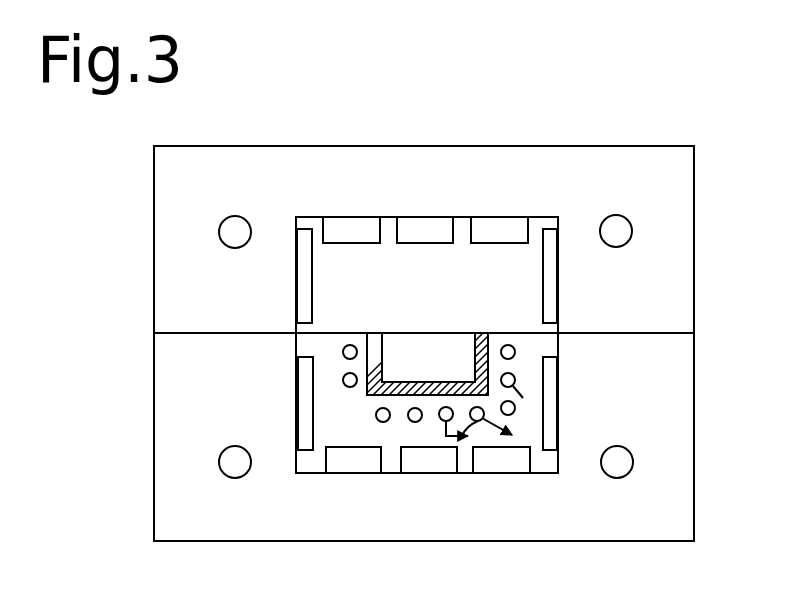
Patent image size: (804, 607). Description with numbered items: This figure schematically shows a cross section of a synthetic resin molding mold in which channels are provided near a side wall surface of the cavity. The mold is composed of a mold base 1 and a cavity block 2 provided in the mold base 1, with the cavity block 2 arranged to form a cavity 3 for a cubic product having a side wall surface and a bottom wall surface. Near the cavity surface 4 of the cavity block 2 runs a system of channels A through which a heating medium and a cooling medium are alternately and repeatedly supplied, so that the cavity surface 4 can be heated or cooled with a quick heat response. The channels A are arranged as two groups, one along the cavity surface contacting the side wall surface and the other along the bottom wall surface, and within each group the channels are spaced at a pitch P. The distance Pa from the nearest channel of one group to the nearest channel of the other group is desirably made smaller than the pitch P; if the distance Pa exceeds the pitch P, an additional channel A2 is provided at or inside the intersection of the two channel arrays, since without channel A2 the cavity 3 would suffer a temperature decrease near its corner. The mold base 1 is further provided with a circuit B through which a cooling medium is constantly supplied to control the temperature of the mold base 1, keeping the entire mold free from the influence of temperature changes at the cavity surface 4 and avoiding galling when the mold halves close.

The mold base 1 is at (660, 146).
The cavity block 2 is at (548, 271).
The cavity 3 is at (493, 343).
The cavity surface 4 is at (400, 395).
The channel A is at (418, 421).
The pitch P is at (480, 421).
The circuit B is at (622, 477).
The channel A2 is at (513, 433).
The distance Pa is at (533, 412).